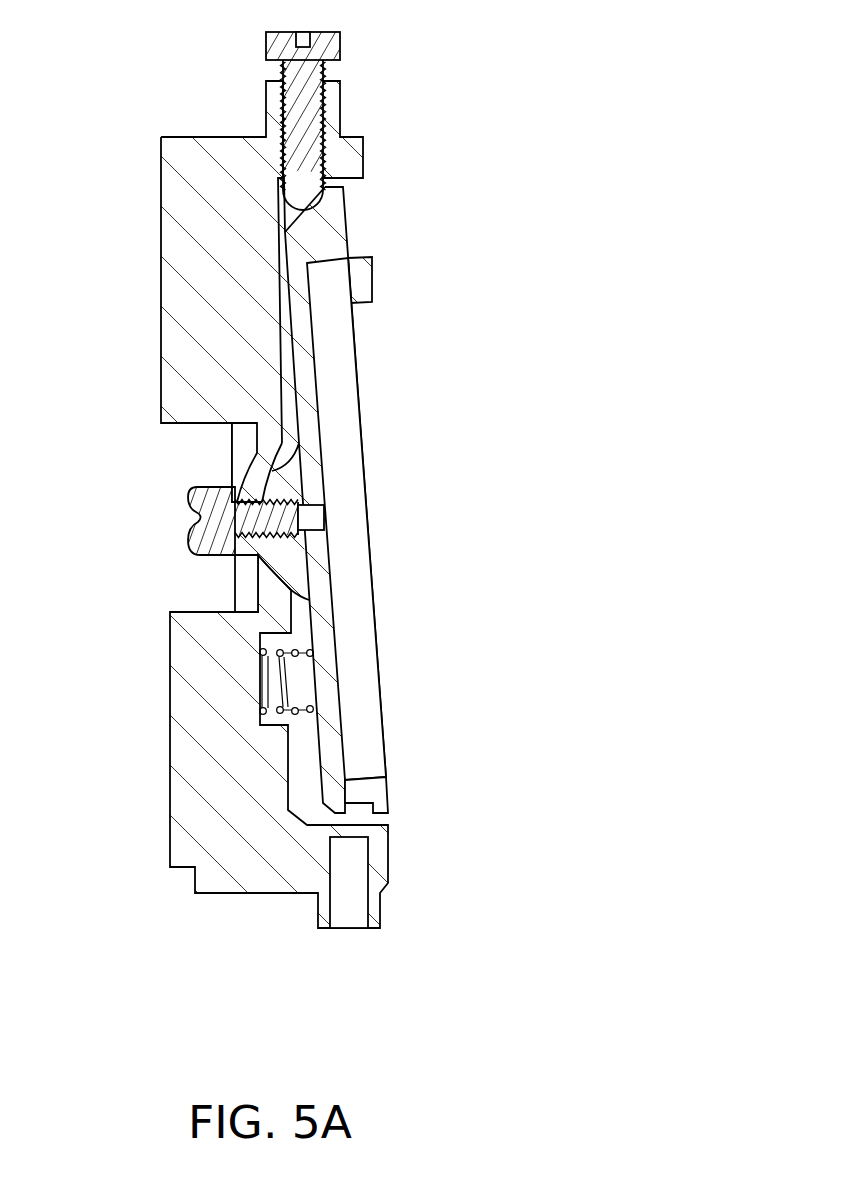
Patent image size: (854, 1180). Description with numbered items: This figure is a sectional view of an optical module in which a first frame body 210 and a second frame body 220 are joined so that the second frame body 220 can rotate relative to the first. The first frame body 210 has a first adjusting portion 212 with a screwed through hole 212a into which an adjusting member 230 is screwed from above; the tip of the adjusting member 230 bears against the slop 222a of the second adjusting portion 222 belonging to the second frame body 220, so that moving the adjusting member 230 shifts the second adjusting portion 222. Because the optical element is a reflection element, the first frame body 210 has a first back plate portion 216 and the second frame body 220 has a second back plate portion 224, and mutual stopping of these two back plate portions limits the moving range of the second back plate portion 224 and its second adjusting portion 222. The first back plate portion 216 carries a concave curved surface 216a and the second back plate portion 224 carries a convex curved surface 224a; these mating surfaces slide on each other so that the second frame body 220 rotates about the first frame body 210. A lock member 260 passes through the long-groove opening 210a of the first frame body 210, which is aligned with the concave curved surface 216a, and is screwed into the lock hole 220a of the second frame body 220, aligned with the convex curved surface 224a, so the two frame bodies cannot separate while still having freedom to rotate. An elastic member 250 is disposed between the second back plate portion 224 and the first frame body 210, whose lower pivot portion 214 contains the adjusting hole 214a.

The first frame body 210 is at (137, 283).
The opening 210a is at (252, 487).
The first adjusting portion 212 is at (352, 157).
The screwed through hole 212a is at (323, 107).
The pivot portion 214 is at (197, 752).
The adjusting hole 214a is at (368, 860).
The first back plate portion 216 is at (203, 358).
The concave curved surface 216a is at (278, 465).
The second frame body 220 is at (368, 796).
The lock hole 220a is at (287, 508).
The second adjusting portion 222 is at (333, 235).
The slop 222a is at (285, 232).
The second back plate portion 224 is at (307, 392).
The convex curved surface 224a is at (272, 572).
The adjusting member 230 is at (340, 47).
The elastic member 250 is at (263, 652).
The lock member 260 is at (212, 520).